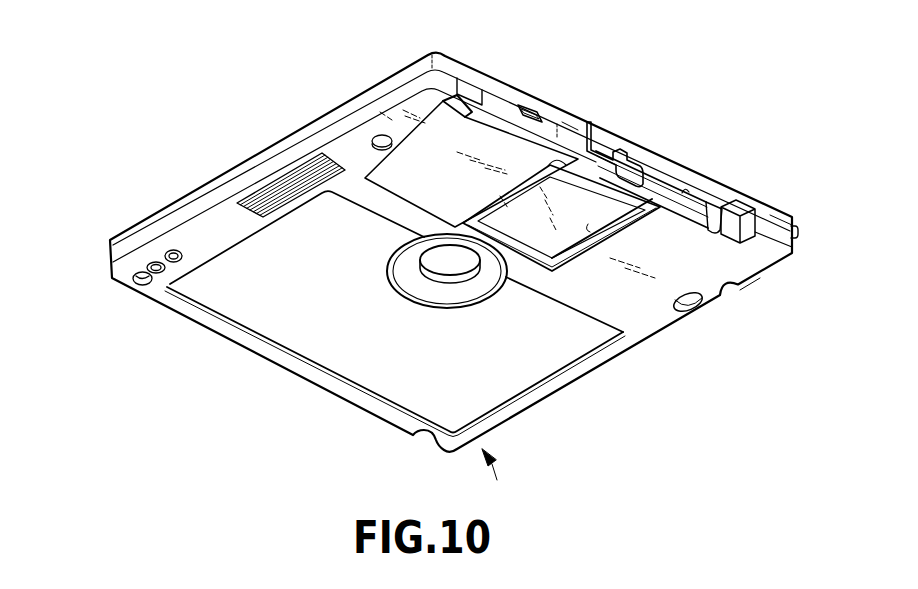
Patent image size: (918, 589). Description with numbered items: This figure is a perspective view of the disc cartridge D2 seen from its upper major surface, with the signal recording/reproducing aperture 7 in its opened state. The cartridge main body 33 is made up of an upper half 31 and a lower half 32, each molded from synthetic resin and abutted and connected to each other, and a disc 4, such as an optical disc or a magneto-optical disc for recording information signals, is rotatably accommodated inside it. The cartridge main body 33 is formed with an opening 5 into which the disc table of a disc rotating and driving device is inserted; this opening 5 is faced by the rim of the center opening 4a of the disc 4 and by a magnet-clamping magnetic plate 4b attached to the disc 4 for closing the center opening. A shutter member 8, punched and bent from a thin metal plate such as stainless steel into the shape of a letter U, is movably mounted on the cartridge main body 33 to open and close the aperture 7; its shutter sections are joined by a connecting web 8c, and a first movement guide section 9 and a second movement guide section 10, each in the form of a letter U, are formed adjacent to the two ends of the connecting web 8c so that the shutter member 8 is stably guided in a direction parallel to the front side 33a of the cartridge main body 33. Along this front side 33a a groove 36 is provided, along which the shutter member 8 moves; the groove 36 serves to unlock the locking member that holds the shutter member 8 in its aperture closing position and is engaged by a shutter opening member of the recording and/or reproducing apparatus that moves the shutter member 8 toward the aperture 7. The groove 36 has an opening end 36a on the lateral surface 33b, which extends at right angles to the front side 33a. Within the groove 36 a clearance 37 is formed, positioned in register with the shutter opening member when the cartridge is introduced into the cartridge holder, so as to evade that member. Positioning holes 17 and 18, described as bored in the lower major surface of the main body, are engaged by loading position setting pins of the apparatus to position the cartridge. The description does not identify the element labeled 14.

The cartridge main body 33 is at (52, 214).
The upper half 31 is at (108, 243).
The lower half 32 is at (110, 262).
The front side 33a is at (794, 210).
The lateral surface 33b is at (763, 283).
The shutter member 8 is at (432, 160).
The connecting web 8c is at (570, 127).
The second movement guide section 10 is at (467, 88).
The positioning hole 17 is at (372, 140).
The signal recording/reproducing aperture 7 is at (590, 226).
The disc 4 is at (580, 202).
The first movement guide section 9 is at (627, 168).
The guide rail 14 is at (650, 162).
The clearance 37 is at (686, 192).
The groove 36 is at (733, 200).
The opening end 36a is at (794, 238).
The positioning hole 18 is at (690, 310).
The opening 5 is at (400, 288).
The center opening 4a is at (437, 263).
The magnet-clamping magnetic plate 4b is at (452, 262).
The disc cartridge D2 is at (501, 479).